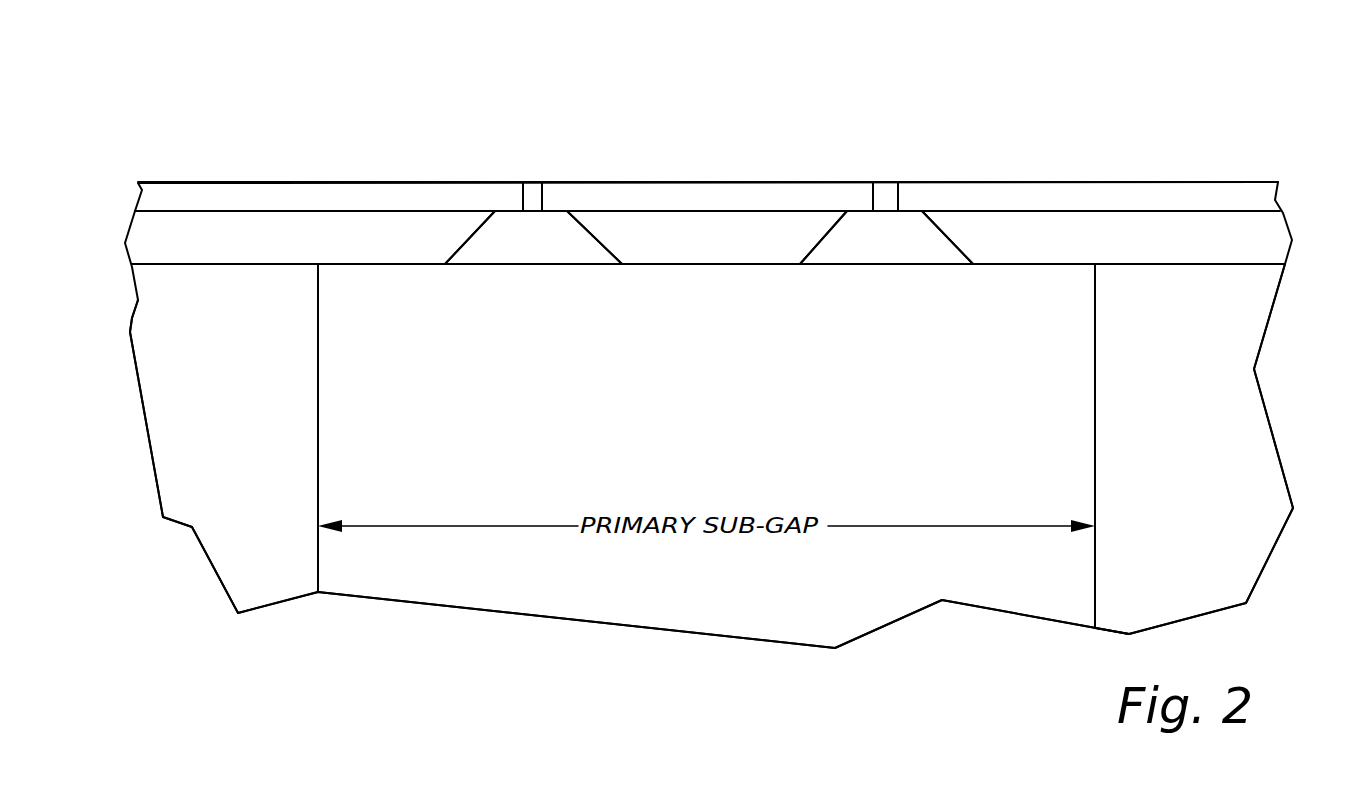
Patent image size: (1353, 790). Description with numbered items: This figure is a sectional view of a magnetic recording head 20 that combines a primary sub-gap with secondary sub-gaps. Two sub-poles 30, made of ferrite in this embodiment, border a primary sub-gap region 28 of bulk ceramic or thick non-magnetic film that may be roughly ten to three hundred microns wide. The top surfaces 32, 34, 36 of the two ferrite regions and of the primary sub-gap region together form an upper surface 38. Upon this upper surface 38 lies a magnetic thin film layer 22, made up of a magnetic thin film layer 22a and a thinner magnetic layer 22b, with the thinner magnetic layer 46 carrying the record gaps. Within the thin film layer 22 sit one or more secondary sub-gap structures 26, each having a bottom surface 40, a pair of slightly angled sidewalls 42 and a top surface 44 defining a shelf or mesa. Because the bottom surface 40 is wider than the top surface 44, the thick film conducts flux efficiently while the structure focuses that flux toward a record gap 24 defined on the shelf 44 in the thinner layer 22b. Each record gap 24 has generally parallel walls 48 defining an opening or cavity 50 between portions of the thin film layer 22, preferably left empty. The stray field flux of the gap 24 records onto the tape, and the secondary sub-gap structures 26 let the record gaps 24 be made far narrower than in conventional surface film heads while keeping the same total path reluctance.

The head 20 is at (312, 673).
The magnetic thin film layer 22 is at (1143, 233).
The magnetic thin film layer 22a is at (228, 227).
The thinner magnetic layer 22b is at (298, 200).
The record gap 24 is at (531, 178).
The secondary sub-gap structure 26 is at (563, 247).
The primary sub-gap region 28 is at (943, 452).
The sub-pole 30 is at (192, 472).
The top surface 32 is at (210, 263).
The top surface 34 is at (1230, 263).
The top surface 36 is at (395, 267).
The upper surface 38 is at (233, 263).
The bottom surface 40 is at (487, 265).
The sidewall 42 is at (477, 230).
The top surface 44 is at (522, 210).
The thinner magnetic layer 46 is at (750, 193).
The parallel walls 48 is at (542, 199).
The cavity 50 is at (887, 193).